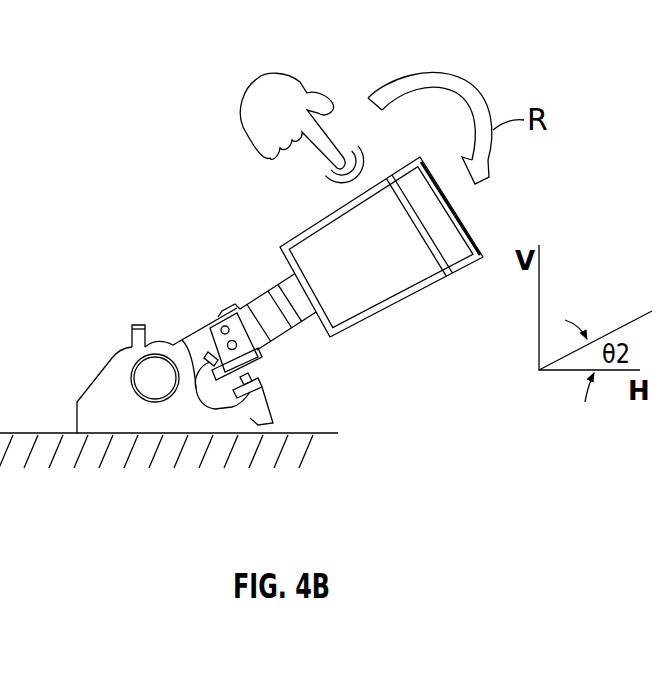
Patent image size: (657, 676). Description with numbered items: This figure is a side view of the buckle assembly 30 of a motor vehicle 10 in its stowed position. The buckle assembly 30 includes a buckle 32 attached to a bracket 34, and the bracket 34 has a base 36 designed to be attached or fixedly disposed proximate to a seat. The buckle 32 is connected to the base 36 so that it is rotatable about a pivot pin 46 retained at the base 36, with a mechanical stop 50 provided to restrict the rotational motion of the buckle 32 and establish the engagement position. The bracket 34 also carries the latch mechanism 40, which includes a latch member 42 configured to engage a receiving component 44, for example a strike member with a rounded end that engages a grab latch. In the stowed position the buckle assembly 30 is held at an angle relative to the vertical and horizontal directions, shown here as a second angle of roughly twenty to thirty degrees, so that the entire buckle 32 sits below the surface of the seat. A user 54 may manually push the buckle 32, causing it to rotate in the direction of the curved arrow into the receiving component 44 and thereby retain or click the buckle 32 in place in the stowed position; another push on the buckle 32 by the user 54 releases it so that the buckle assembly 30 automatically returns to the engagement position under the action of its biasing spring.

The motor vehicle 10 is at (330, 432).
The buckle assembly 30 is at (488, 44).
The buckle 32 is at (483, 245).
The bracket 34 is at (173, 373).
The base 36 is at (100, 383).
The latch mechanism 40 is at (298, 369).
The latch member 42 is at (258, 367).
The receiving component 44 is at (270, 413).
The pivot pin 46 is at (158, 383).
The mechanical stop 50 is at (137, 325).
The user 54 is at (258, 75).